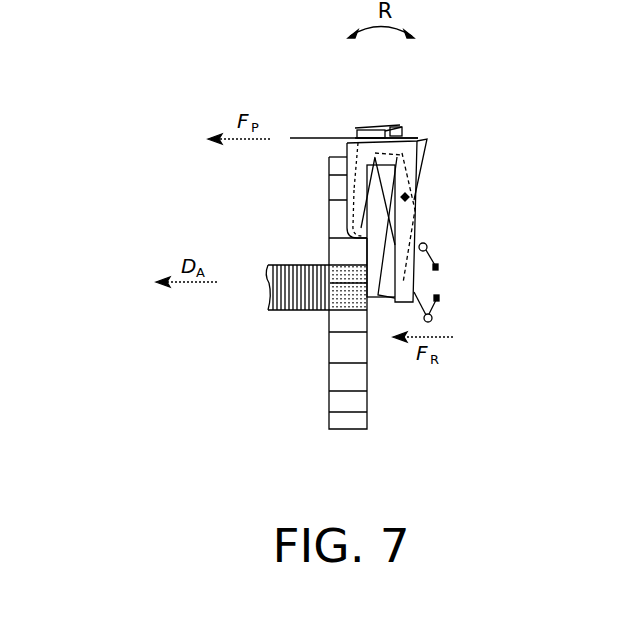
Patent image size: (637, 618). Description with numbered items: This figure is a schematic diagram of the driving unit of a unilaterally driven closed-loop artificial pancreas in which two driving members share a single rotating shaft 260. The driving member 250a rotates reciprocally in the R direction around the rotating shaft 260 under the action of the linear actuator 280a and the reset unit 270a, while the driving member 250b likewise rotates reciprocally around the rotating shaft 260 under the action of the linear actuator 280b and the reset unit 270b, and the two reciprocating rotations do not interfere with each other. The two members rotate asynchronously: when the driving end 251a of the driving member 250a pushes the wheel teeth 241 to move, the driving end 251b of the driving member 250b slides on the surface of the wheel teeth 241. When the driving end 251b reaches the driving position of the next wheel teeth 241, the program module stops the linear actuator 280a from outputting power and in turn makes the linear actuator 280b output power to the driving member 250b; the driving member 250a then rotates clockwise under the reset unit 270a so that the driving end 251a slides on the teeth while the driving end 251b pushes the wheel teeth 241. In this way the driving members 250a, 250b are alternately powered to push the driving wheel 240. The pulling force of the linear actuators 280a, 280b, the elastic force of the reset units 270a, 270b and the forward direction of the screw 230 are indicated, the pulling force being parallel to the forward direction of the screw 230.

The screw 230 is at (283, 312).
The driving wheel 240 is at (349, 430).
The wheel teeth 241 is at (364, 388).
The driving member 250a is at (418, 160).
The driving member 250b is at (418, 138).
The driving end 251a is at (350, 232).
The driving end 251b is at (352, 190).
The rotating shaft 260 is at (408, 197).
The reset unit 270a is at (432, 318).
The reset unit 270b is at (427, 247).
The linear actuator 280a is at (300, 138).
The linear actuator 280b is at (372, 132).